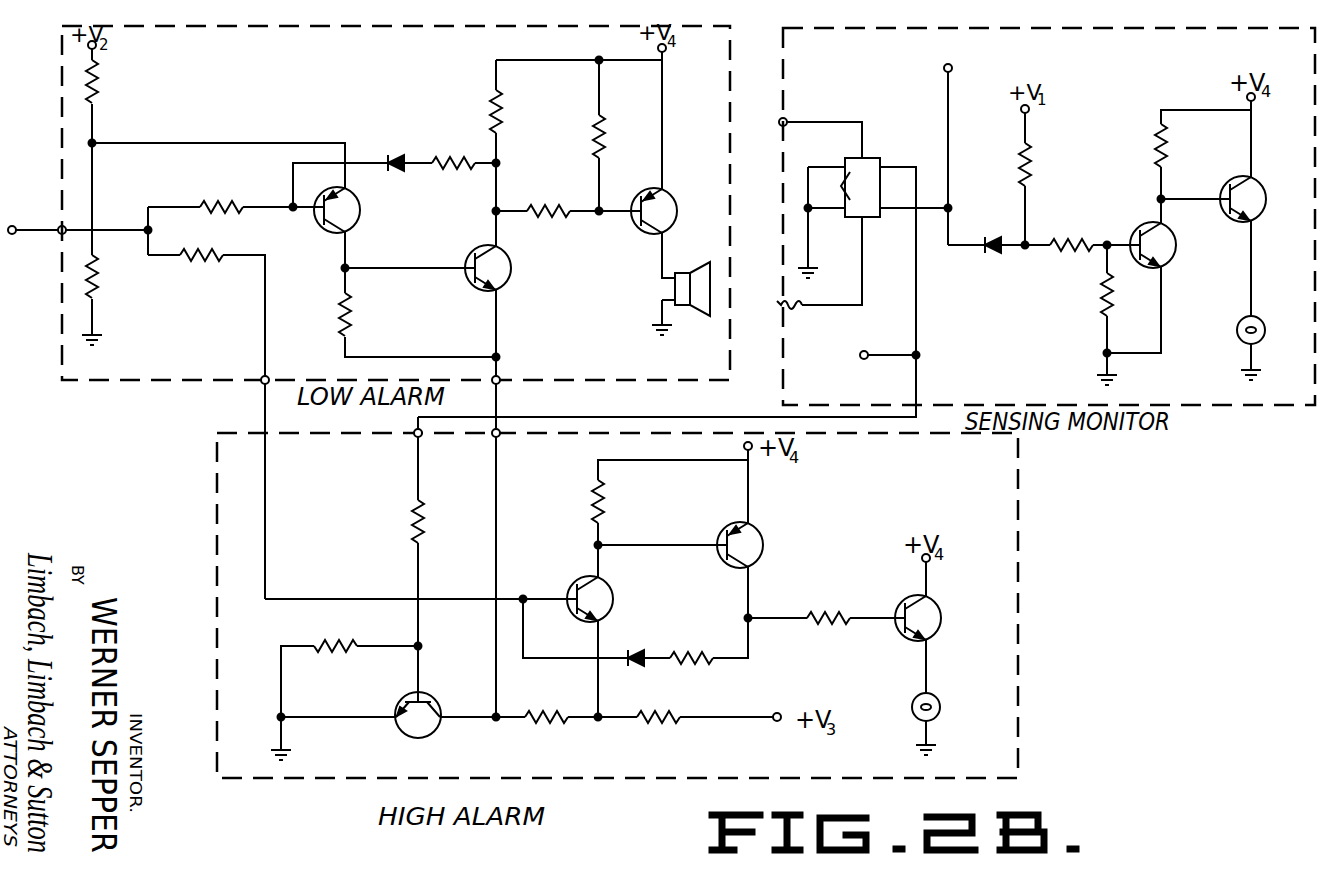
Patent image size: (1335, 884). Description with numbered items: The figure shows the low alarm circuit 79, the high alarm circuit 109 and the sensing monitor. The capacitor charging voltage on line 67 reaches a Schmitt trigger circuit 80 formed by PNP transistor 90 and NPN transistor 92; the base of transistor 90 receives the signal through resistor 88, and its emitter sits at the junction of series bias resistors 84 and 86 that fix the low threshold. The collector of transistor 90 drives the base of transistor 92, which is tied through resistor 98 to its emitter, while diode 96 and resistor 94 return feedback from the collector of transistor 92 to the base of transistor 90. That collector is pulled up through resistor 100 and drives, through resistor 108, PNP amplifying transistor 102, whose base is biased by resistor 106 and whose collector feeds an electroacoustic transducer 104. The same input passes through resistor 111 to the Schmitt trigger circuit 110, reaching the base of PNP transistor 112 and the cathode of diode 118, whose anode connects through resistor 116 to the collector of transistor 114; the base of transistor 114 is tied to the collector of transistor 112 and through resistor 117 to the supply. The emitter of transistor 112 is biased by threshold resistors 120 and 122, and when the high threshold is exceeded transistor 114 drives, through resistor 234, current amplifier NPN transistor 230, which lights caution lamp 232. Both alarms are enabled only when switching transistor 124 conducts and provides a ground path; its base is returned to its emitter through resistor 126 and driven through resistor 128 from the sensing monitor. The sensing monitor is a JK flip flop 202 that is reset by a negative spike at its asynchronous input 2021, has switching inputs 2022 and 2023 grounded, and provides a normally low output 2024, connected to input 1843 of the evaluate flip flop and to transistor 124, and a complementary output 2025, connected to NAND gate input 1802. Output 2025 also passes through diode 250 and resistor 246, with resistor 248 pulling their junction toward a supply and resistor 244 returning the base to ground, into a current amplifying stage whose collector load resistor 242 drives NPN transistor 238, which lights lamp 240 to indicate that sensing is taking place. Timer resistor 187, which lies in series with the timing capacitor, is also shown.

The line 67 is at (46, 226).
The low alarm circuit 79 is at (146, 386).
The Schmitt trigger circuit 80 is at (444, 331).
The bias resistor 84 is at (107, 80).
The bias resistor 86 is at (98, 292).
The resistor 88 is at (232, 198).
The PNP transistor 90 is at (362, 212).
The NPN transistor 92 is at (510, 284).
The resistor 94 is at (458, 157).
The diode 96 is at (407, 156).
The resistor 98 is at (338, 300).
The resistor 100 is at (503, 113).
The PNP amplifying transistor 102 is at (668, 191).
The electroacoustic transducer 104 is at (693, 265).
The resistor 106 is at (595, 140).
The resistor 108 is at (552, 215).
The high alarm circuit 109 is at (215, 500).
The Schmitt trigger circuit 110 is at (683, 622).
The resistor 111 is at (201, 260).
The PNP transistor 112 is at (584, 581).
The transistor 114 is at (727, 529).
The resistor 116 is at (682, 668).
The resistor 117 is at (598, 502).
The diode 118 is at (646, 670).
The resistor 120 is at (557, 736).
The resistor 122 is at (674, 738).
The switching transistor 124 is at (410, 728).
The resistor 126 is at (322, 641).
The resistor 128 is at (410, 535).
The resistor 187 is at (967, 240).
The JK flip flop 202 is at (872, 200).
The current amplifier NPN transistor 230 is at (944, 612).
The lamp 232 is at (943, 712).
The resistor 234 is at (844, 612).
The NPN current amplifying transistor 238 is at (1260, 185).
The lamp 240 is at (1261, 318).
The resistor 242 is at (1158, 145).
The resistor 244 is at (1101, 306).
The resistor 246 is at (1079, 262).
The resistor 248 is at (1034, 171).
The diode 250 is at (991, 262).
The NAND gate input 1802 is at (948, 66).
The flip flop input 1843 is at (892, 346).
The asynchronous input 2021 is at (824, 122).
The switching input 2022 is at (838, 158).
The switching input 2023 is at (830, 208).
The flip flop output 2024 is at (887, 160).
The flip flop output 2025 is at (895, 208).